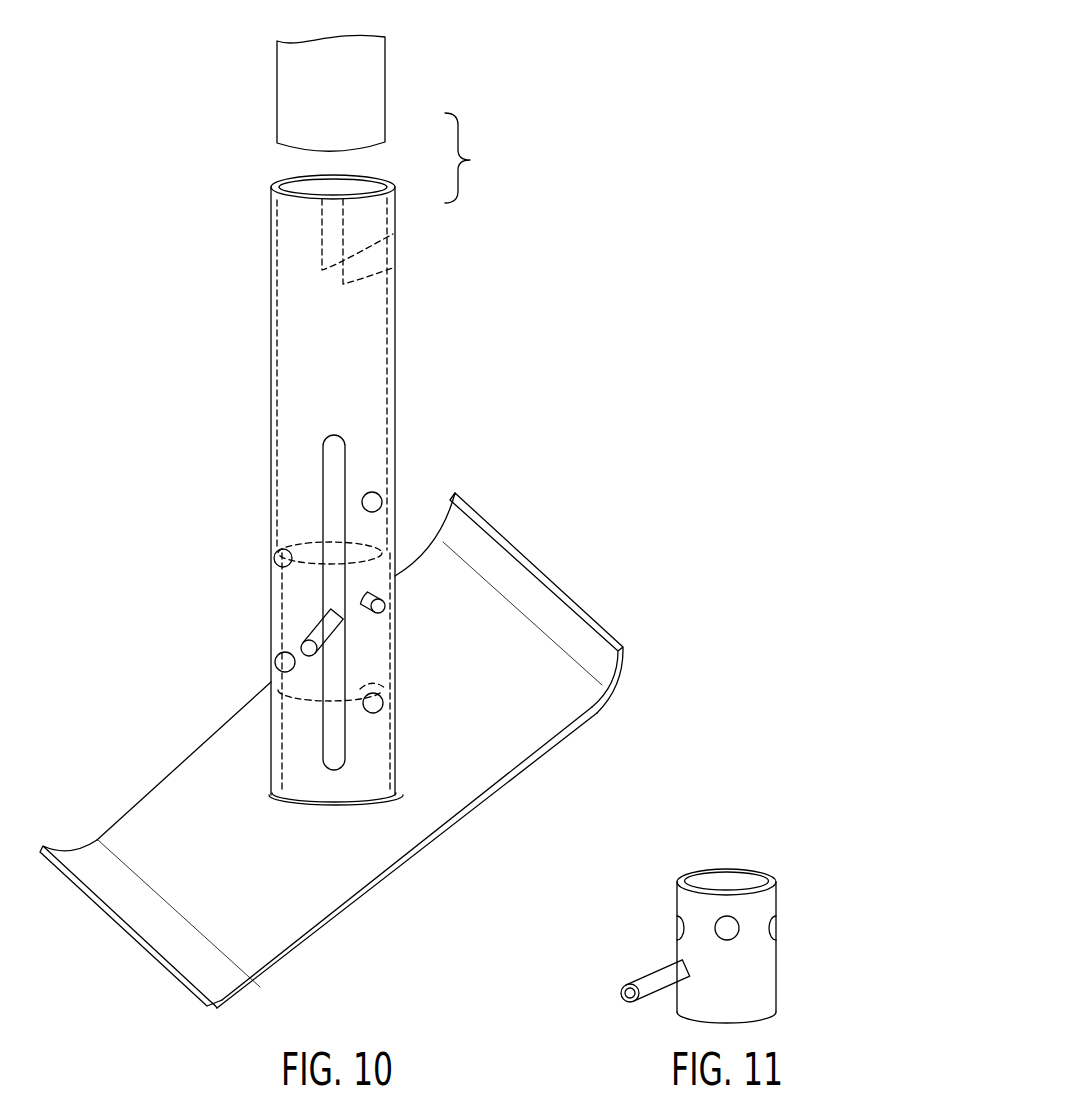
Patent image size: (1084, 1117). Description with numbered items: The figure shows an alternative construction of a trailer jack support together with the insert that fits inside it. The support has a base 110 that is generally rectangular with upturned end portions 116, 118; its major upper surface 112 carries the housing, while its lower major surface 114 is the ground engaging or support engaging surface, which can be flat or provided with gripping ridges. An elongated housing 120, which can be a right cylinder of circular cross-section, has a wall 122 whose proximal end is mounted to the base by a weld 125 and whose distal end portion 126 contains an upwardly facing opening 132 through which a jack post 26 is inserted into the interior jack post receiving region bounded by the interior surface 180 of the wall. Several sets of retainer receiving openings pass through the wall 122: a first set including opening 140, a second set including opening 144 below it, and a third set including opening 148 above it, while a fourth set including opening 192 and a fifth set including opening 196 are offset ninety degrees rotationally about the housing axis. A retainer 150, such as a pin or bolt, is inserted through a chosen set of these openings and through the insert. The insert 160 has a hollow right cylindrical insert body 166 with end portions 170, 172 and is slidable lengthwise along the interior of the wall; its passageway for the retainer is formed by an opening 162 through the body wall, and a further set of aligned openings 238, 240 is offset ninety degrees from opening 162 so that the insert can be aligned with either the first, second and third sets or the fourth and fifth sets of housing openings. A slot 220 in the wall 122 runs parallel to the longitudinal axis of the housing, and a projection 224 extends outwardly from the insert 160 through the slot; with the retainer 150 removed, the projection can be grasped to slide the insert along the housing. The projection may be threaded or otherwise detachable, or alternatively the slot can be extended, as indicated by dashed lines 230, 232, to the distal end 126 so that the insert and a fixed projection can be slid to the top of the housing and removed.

In FIG. 10, the jack post 26 is at (372, 80).
In FIG. 10, the base 110 is at (336, 750).
In FIG. 10, the major upper surface 112 is at (500, 768).
In FIG. 10, the lower major surface 114 is at (488, 808).
In FIG. 10, the upturned end portion 116 is at (578, 606).
In FIG. 10, the upturned end portion 118 is at (140, 945).
In FIG. 10, the housing 120 is at (347, 504).
In FIG. 10, the wall 122 is at (396, 449).
In FIG. 10, the weld 125 is at (363, 807).
In FIG. 10, the distal end portion 126 is at (388, 190).
In FIG. 10, the upwardly facing opening 132 is at (360, 186).
In FIG. 10, the retainer receiving opening 140 is at (385, 582).
In FIG. 10, the retainer receiving opening 144 is at (378, 708).
In FIG. 10, the retainer receiving opening 148 is at (376, 500).
In FIG. 10, the retainer 150 is at (381, 608).
In FIG. 10, the insert 160 is at (345, 651).
In FIG. 11, the insert 160 is at (738, 931).
In FIG. 11, the first opening 162 is at (726, 930).
In FIG. 10, the insert body 166 is at (396, 668).
In FIG. 11, the insert body 166 is at (770, 992).
In FIG. 10, the end portion 170 is at (398, 692).
In FIG. 11, the end portion 170 is at (760, 1018).
In FIG. 10, the end portion 172 is at (388, 536).
In FIG. 11, the end portion 172 is at (737, 872).
In FIG. 10, the interior surface 180 is at (387, 373).
In FIG. 10, the opening 192 is at (277, 659).
In FIG. 10, the opening 196 is at (277, 555).
In FIG. 10, the slot 220 is at (323, 743).
In FIG. 10, the projection 224 is at (312, 636).
In FIG. 11, the projection 224 is at (645, 990).
In FIG. 10, the dashed line 230 is at (393, 268).
In FIG. 10, the dashed line 232 is at (393, 234).
In FIG. 11, the opening 238 is at (778, 925).
In FIG. 11, the opening 240 is at (678, 927).